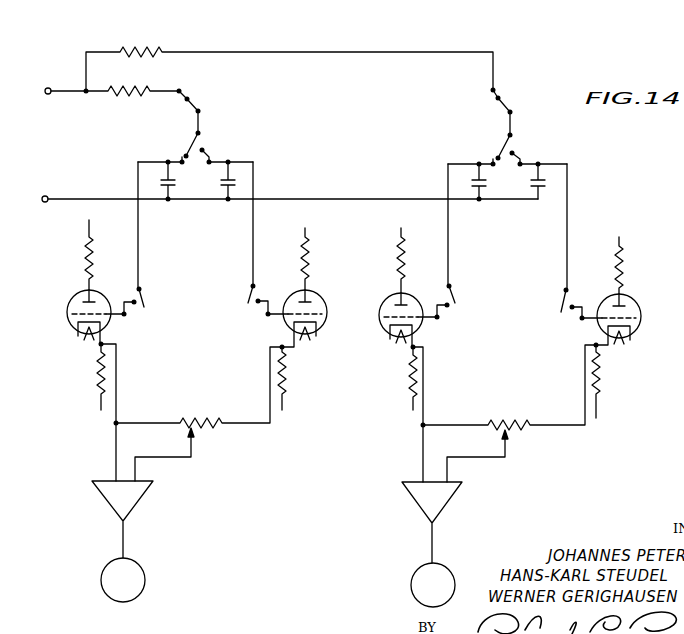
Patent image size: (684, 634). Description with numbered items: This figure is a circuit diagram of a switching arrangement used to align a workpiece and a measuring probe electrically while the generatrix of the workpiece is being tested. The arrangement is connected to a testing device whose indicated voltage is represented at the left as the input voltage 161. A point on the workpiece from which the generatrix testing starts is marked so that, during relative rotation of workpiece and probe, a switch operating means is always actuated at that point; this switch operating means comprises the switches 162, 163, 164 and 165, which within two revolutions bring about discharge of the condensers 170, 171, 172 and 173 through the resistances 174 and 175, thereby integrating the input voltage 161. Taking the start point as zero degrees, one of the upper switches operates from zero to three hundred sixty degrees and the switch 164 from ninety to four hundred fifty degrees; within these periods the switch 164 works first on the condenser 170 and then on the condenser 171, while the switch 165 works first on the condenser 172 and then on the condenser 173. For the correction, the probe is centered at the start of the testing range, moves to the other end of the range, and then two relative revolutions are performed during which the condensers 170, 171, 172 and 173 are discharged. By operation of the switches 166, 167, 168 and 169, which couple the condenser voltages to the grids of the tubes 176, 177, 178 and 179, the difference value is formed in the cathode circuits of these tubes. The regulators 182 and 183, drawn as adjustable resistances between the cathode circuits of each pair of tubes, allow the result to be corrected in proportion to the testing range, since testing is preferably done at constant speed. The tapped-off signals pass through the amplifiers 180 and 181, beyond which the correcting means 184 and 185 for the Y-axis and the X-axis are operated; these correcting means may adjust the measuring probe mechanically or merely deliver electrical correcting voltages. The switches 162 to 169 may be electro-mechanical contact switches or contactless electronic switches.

The input voltage 161 is at (70, 93).
The switch 162 is at (193, 106).
The switch 163 is at (200, 143).
The switch 164 is at (503, 104).
The switch 165 is at (514, 144).
The switch 166 is at (144, 298).
The switch 167 is at (250, 300).
The switch 168 is at (452, 295).
The switch 169 is at (563, 302).
The condenser 170 is at (164, 178).
The condenser 171 is at (231, 178).
The condenser 172 is at (472, 181).
The condenser 173 is at (541, 181).
The resistance 174 is at (133, 83).
The resistance 175 is at (134, 46).
The tube 176 is at (70, 323).
The tube 177 is at (284, 320).
The tube 178 is at (419, 322).
The tube 179 is at (637, 325).
The amplifier 180 is at (104, 488).
The amplifier 181 is at (412, 488).
The regulator 182 is at (191, 412).
The regulator 183 is at (504, 413).
The correcting means 184 is at (146, 582).
The correcting means 185 is at (411, 580).